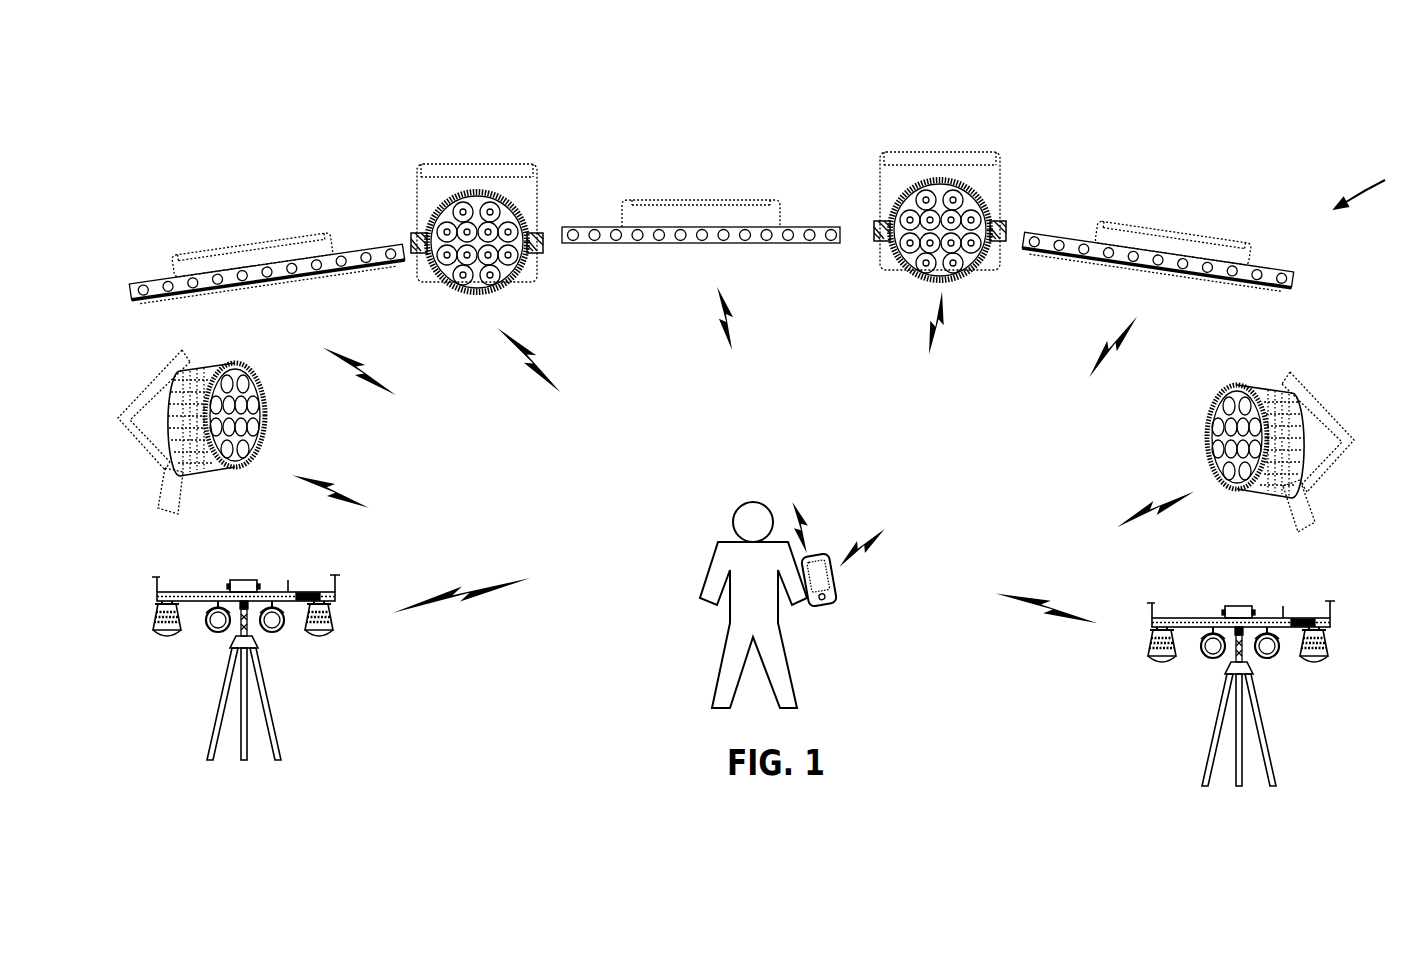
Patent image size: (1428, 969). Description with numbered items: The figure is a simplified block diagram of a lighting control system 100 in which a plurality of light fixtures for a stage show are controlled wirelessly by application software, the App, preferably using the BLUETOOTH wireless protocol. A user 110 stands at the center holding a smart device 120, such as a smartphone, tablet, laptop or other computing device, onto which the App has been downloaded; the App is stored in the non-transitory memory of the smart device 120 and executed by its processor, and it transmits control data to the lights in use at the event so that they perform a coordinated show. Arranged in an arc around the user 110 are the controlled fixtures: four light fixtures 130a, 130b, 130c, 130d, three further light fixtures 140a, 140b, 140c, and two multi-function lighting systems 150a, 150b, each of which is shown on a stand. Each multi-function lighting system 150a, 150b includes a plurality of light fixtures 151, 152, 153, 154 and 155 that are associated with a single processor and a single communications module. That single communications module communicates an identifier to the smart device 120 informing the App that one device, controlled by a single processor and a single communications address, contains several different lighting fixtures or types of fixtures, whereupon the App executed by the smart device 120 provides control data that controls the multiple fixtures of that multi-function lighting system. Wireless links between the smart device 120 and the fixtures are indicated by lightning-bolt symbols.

The lighting control system 100 is at (1381, 179).
The user 110 is at (708, 568).
The smart device 120 is at (833, 593).
The light fixture 130a is at (180, 378).
The light fixture 130b is at (452, 200).
The light fixture 130c is at (930, 183).
The light fixture 130d is at (1287, 396).
The light fixture 140a is at (222, 277).
The light fixture 140b is at (675, 227).
The light fixture 140c is at (1141, 247).
The multi-function lighting system 150a is at (241, 652).
The multi-function lighting system 150b is at (1230, 678).
The light fixture 151 is at (170, 640).
The light fixture 152 is at (216, 634).
The light fixture 153 is at (276, 634).
The light fixture 154 is at (328, 640).
The light fixture 155 is at (254, 567).